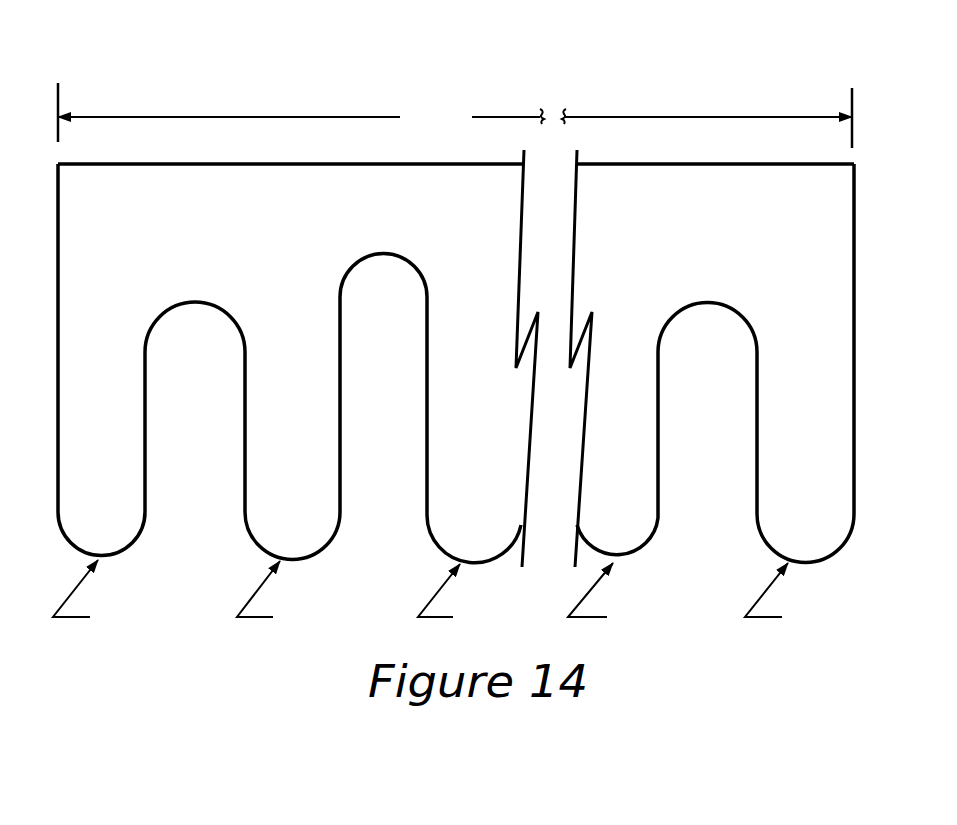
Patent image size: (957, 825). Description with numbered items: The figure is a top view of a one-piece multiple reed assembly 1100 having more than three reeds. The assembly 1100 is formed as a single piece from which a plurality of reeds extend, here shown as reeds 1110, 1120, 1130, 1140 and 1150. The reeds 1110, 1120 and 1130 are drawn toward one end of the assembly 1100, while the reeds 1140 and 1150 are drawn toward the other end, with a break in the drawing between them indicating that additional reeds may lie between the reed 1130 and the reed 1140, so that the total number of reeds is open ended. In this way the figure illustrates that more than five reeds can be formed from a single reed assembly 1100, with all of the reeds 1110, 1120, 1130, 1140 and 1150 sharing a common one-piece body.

The one-piece multiple reed assembly 1100 is at (146, 78).
The reed 1110 is at (129, 521).
The reed 1120 is at (314, 521).
The reed 1130 is at (501, 521).
The reed 1140 is at (648, 521).
The reed 1150 is at (834, 521).